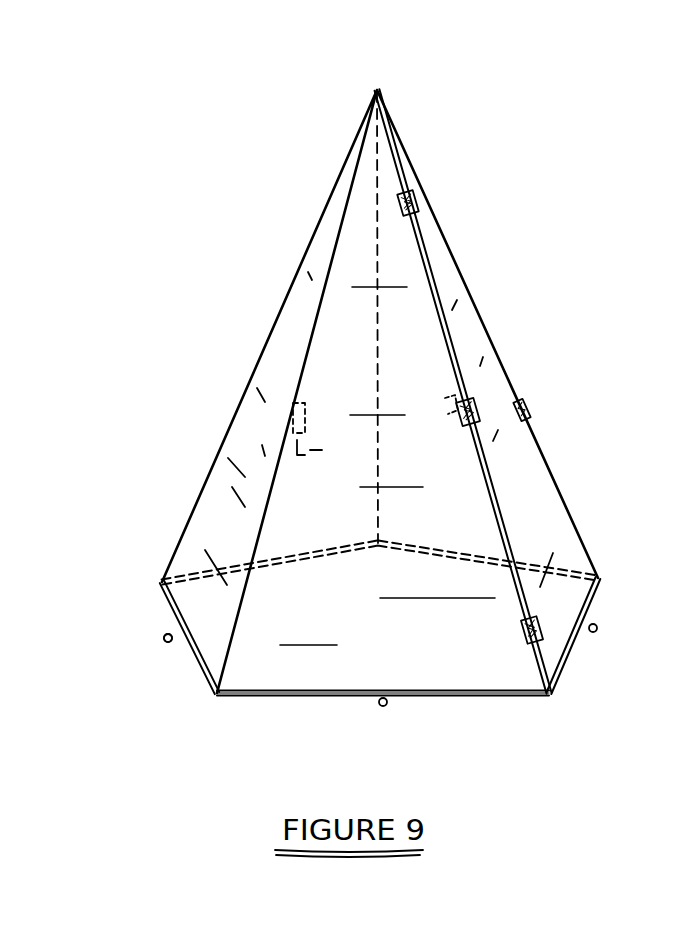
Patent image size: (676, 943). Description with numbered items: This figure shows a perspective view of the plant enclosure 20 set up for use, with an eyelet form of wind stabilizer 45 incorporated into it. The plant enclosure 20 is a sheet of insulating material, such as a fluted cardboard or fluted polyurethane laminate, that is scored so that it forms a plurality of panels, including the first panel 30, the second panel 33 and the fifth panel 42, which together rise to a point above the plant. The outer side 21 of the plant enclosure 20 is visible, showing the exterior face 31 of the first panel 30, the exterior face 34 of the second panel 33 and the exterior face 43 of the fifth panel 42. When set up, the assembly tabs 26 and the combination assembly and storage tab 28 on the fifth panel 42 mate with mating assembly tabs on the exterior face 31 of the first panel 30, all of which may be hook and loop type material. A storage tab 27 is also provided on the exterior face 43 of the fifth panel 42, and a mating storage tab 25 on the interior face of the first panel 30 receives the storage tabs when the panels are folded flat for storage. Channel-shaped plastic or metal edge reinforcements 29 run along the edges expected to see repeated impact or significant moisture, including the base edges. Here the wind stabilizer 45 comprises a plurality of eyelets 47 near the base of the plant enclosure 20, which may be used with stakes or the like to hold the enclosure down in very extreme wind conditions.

The plant enclosure 20 is at (490, 188).
The outer side 21 is at (303, 303).
The mating storage tab 25 is at (437, 410).
The assembly tab 26 is at (418, 197).
The storage tab 27 is at (533, 400).
The combination assembly and storage tab 28 is at (485, 398).
The edge reinforcement 29 is at (440, 290).
The first panel 30 is at (422, 663).
The exterior face of the first panel 31 is at (328, 335).
The second panel 33 is at (218, 515).
The exterior face of the second panel 34 is at (246, 474).
The fifth panel 42 is at (556, 512).
The exterior face of the fifth panel 43 is at (525, 507).
The wind stabilizer 45 is at (156, 640).
The eyelet 47 is at (173, 652).